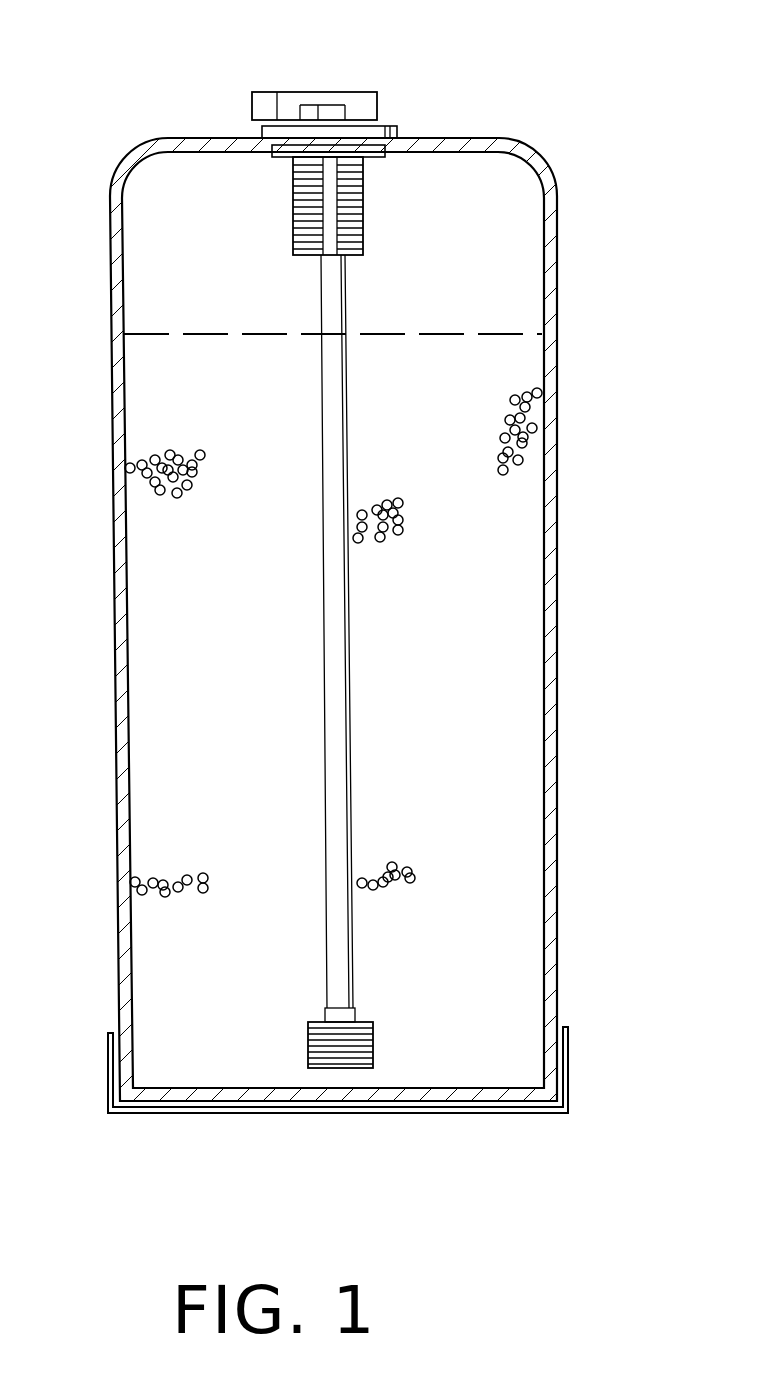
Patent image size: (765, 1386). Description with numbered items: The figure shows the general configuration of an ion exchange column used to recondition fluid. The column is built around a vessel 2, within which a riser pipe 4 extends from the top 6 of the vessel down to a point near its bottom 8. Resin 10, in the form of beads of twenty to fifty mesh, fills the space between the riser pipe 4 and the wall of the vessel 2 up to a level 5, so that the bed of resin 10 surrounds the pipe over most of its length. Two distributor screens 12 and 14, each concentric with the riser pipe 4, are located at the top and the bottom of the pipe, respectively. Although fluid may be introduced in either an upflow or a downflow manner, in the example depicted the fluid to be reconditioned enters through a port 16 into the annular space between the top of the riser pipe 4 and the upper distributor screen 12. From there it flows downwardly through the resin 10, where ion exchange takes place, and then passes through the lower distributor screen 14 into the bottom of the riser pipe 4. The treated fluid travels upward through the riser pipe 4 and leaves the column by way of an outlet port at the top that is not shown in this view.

The vessel 2 is at (557, 563).
The riser pipe 4 is at (352, 702).
The level 5 is at (148, 335).
The top 6 is at (417, 137).
The bottom 8 is at (422, 1088).
The resin 10 is at (478, 398).
The distributor screen 12 is at (366, 216).
The distributor screen 14 is at (373, 1042).
The port 16 is at (262, 92).